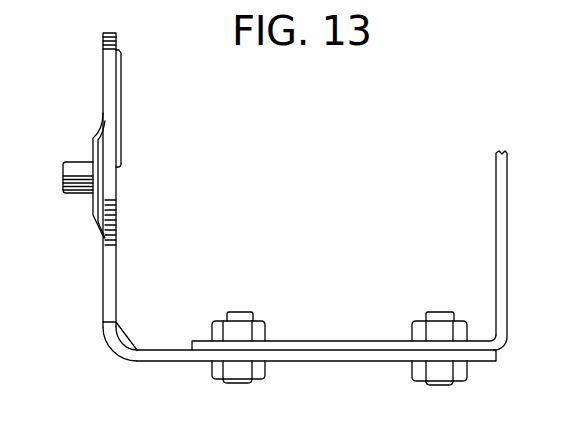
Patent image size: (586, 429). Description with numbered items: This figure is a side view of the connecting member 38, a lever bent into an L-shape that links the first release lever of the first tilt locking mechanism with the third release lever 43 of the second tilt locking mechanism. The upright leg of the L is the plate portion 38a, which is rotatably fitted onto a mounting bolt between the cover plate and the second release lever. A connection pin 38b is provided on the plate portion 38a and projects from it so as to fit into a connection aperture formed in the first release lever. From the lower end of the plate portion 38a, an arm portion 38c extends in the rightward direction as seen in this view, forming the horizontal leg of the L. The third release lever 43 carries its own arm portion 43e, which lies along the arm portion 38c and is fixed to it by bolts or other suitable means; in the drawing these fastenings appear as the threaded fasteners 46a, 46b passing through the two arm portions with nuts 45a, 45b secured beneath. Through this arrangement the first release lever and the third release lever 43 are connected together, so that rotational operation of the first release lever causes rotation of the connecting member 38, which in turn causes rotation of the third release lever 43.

The connecting member 38 is at (103, 238).
The plate portion 38a is at (110, 192).
The connection pin 38b is at (76, 162).
The arm portion 38c is at (328, 362).
The third release lever 43 is at (497, 257).
The arm portion 43e is at (365, 341).
The nut 45a is at (215, 378).
The nut 45b is at (447, 379).
The nut 46a is at (268, 325).
The nut 46b is at (458, 323).